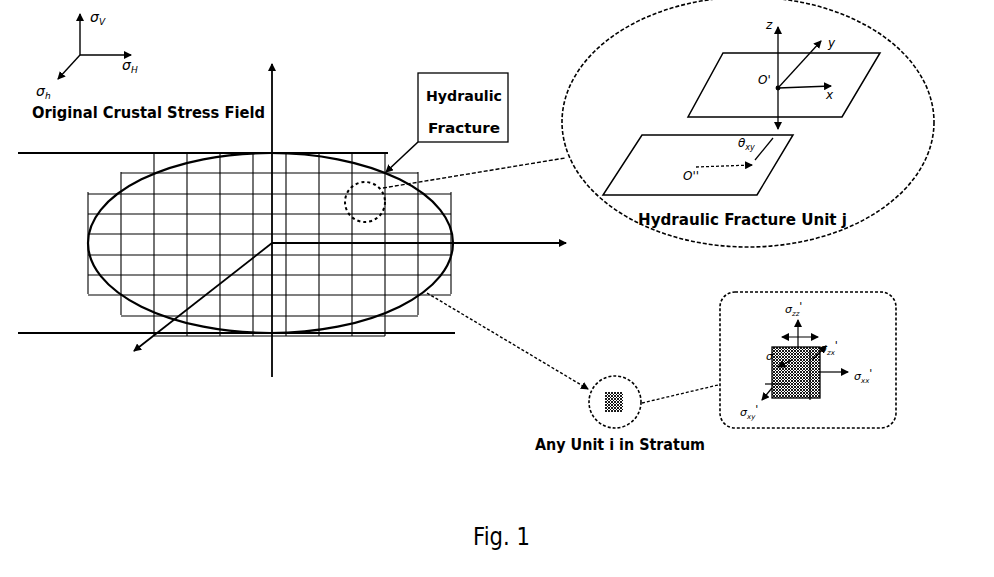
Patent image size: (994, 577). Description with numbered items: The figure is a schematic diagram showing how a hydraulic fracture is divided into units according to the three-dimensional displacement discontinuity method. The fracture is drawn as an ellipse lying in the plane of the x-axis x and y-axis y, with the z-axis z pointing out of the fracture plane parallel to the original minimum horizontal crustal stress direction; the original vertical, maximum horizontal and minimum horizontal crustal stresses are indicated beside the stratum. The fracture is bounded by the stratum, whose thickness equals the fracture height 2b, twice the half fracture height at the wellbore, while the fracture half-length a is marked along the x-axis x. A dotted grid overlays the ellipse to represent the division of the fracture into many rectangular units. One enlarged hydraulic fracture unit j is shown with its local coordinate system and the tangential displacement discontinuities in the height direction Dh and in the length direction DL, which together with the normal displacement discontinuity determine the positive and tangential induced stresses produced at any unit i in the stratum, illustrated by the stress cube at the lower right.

The fracture height 2b is at (44, 153).
The fracture half-length a is at (453, 192).
The x-axis x is at (419, 254).
The y-axis y is at (281, 218).
The z-axis z is at (197, 310).
The tangential displacement discontinuity in height direction Dh is at (789, 108).
The tangential displacement discontinuity in length direction DL is at (724, 176).